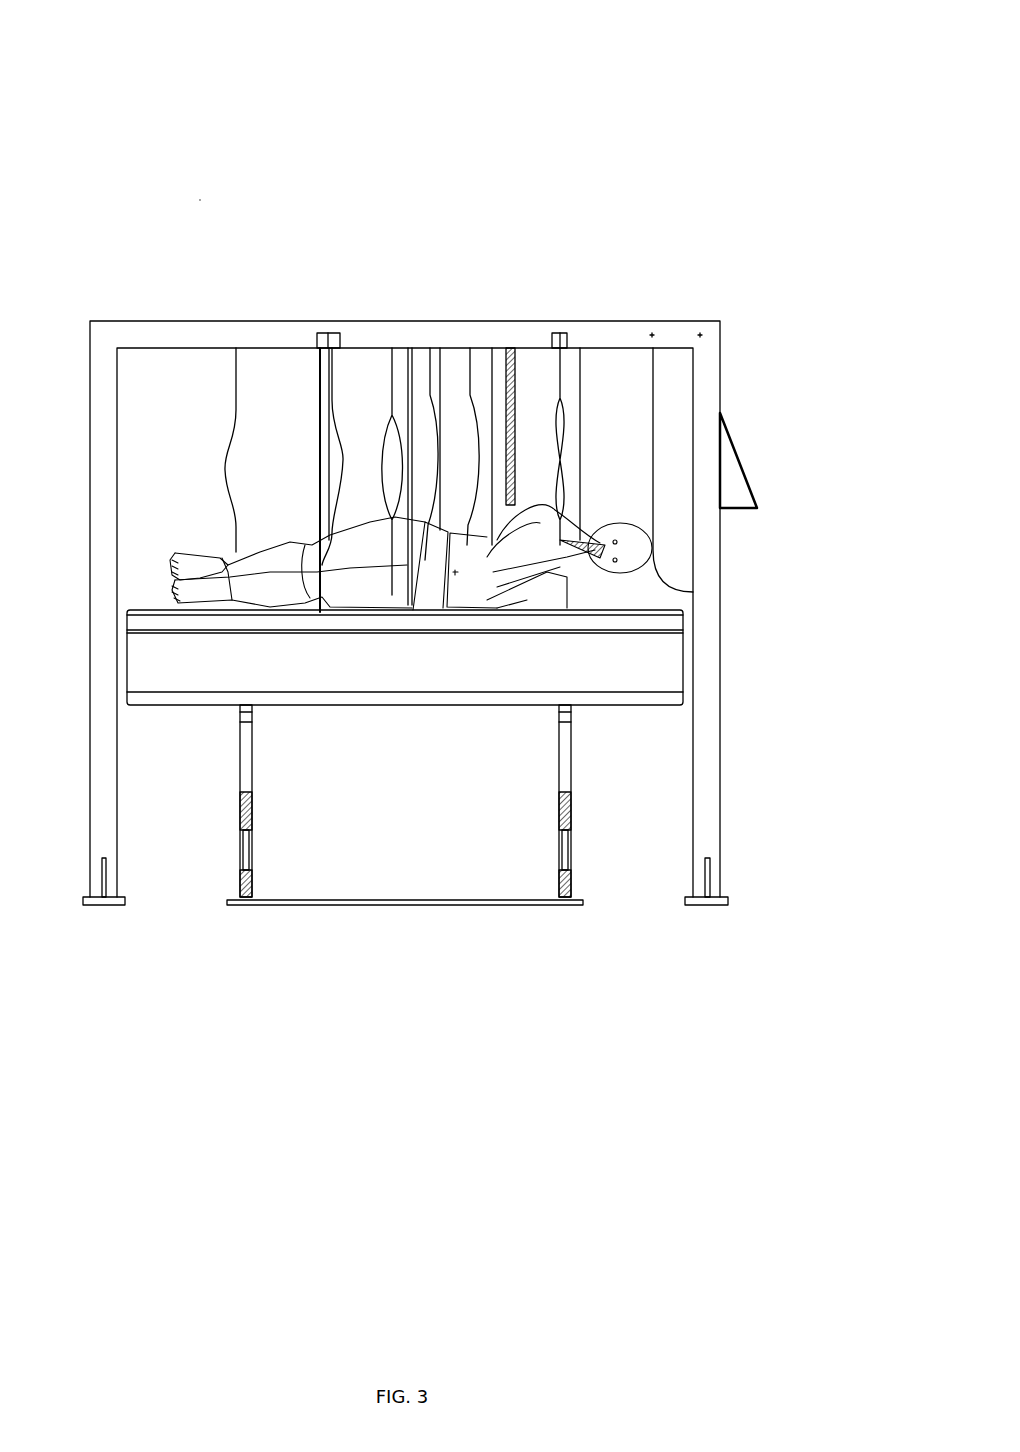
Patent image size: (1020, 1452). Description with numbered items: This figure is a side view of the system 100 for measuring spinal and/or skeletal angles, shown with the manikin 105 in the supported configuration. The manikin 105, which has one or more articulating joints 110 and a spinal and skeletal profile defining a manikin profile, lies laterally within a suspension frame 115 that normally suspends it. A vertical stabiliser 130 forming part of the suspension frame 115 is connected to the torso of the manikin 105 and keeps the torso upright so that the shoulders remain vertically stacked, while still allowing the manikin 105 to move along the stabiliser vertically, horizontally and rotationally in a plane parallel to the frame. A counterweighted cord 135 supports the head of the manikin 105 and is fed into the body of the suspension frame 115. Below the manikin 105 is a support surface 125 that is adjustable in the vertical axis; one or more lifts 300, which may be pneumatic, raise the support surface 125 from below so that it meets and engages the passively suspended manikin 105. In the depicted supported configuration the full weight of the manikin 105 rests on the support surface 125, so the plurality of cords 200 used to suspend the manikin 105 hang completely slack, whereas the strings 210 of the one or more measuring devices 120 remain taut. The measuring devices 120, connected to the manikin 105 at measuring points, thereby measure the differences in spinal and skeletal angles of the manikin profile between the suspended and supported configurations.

The system 100 is at (670, 167).
The manikin 105 is at (570, 590).
The articulating joints 110 is at (320, 572).
The suspension frame 115 is at (672, 321).
The measuring devices 120 is at (320, 333).
The support surface 125 is at (645, 612).
The vertical stabiliser 130 is at (513, 390).
The counterweighted cord 135 is at (653, 388).
The plurality of cords 200 is at (236, 390).
The strings 210 is at (320, 390).
The lifts 300 is at (240, 830).